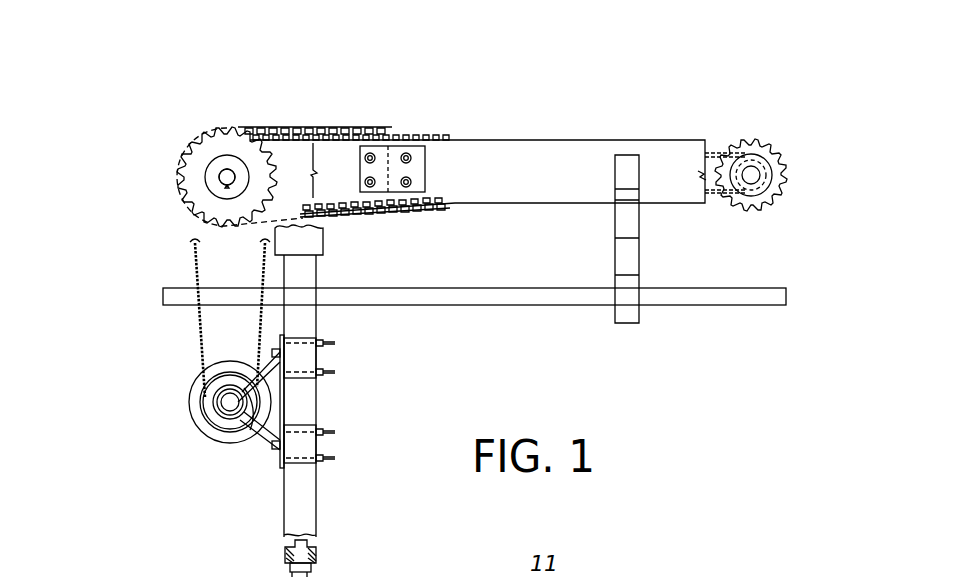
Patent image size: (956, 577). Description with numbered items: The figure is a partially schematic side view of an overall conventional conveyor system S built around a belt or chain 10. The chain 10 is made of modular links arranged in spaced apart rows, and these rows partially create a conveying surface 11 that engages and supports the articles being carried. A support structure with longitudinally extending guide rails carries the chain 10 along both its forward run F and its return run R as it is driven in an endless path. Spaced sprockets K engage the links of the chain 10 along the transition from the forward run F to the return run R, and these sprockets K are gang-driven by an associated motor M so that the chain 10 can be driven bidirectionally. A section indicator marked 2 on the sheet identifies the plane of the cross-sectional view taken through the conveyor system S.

The chain 10 is at (335, 128).
The conveying surface 11 is at (279, 117).
The sprockets K is at (262, 172).
The conveyor system S is at (693, 126).
The forward run F is at (563, 118).
The return run R is at (473, 229).
The motor M is at (233, 444).
The section line II-II 2 is at (272, 72).